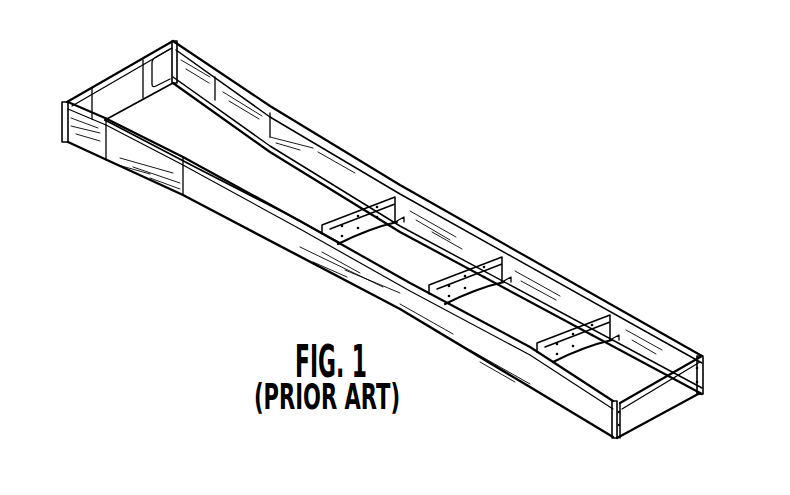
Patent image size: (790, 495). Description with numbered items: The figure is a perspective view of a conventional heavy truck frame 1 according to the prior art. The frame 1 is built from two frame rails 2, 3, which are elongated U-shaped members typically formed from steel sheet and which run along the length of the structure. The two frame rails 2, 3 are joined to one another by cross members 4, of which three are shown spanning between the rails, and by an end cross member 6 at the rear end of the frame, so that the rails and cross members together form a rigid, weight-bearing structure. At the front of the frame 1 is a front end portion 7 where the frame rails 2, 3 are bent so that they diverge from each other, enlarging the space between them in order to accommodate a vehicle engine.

The frame 1 is at (436, 123).
The frame rail 2 is at (164, 177).
The frame rail 3 is at (246, 108).
The cross members 4 is at (492, 252).
The end cross member 6 is at (637, 410).
The front end portion 7 is at (102, 62).